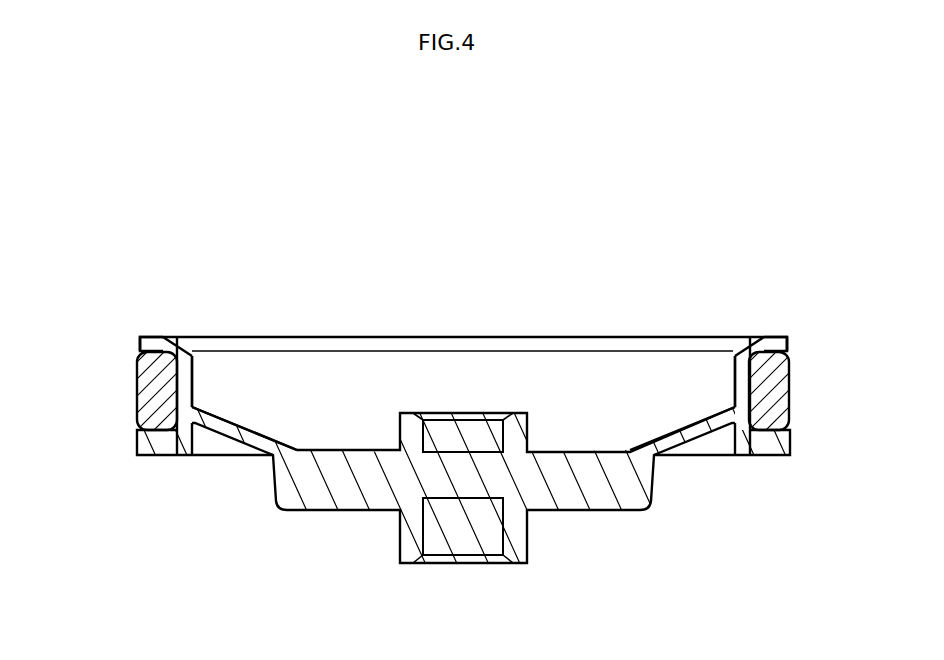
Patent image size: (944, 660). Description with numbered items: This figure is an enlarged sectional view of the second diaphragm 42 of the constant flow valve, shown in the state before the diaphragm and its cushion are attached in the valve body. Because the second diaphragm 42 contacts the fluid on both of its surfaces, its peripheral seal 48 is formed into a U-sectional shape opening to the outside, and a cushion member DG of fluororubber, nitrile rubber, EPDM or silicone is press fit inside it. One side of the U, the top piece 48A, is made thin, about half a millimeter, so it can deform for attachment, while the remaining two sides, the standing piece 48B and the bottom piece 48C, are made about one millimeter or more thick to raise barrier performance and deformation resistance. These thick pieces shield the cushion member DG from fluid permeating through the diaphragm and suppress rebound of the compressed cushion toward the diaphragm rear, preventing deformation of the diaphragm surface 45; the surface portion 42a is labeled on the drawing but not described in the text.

The second diaphragm 42 is at (525, 334).
The inclined web surface 42a is at (253, 430).
The diaphragm surface 45 is at (223, 430).
The peripheral seal 48 is at (158, 337).
The top piece 48A is at (140, 336).
The standing piece 48B is at (188, 372).
The bottom piece 48C is at (160, 447).
The cushion member DG is at (137, 378).